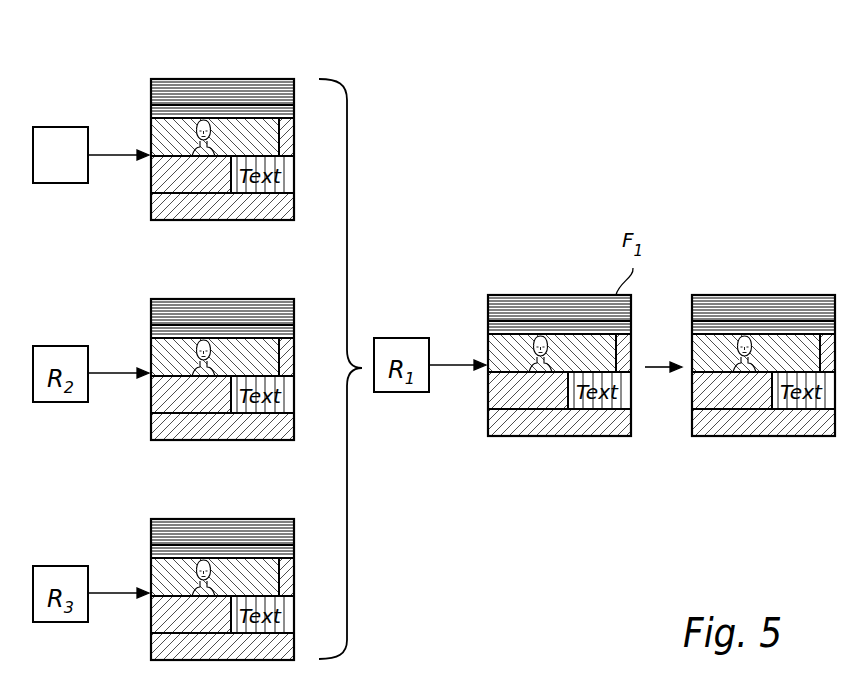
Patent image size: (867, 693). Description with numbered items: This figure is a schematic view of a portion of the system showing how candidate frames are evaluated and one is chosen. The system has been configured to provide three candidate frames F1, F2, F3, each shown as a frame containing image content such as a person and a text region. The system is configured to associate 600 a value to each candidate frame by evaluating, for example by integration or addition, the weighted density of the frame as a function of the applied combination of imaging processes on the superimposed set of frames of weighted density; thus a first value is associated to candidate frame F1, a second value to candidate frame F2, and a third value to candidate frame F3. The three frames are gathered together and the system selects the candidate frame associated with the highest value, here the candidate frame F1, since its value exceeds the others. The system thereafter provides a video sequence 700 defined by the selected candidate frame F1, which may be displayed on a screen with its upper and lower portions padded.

The associating step 600 is at (60, 127).
The video sequence 700 is at (820, 295).
The candidate frame F1 is at (279, 79).
The candidate frame F2 is at (279, 299).
The candidate frame F3 is at (279, 519).